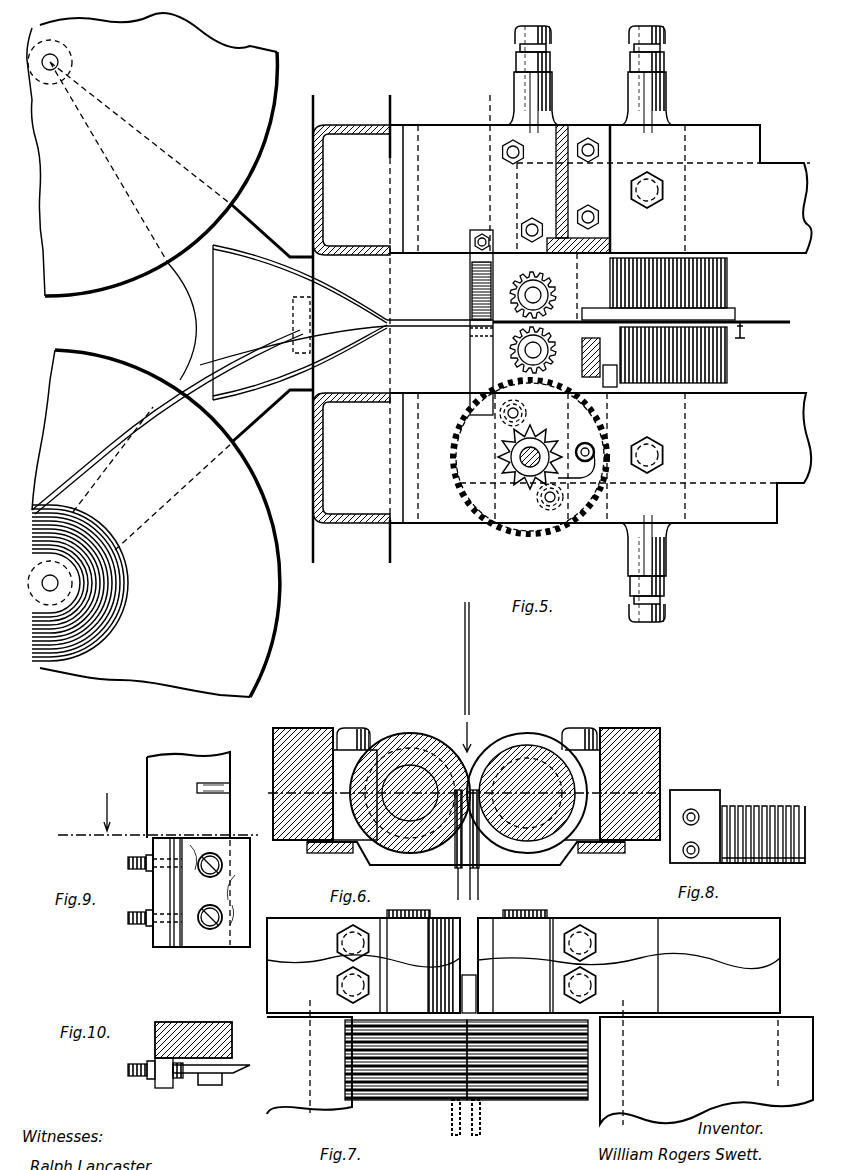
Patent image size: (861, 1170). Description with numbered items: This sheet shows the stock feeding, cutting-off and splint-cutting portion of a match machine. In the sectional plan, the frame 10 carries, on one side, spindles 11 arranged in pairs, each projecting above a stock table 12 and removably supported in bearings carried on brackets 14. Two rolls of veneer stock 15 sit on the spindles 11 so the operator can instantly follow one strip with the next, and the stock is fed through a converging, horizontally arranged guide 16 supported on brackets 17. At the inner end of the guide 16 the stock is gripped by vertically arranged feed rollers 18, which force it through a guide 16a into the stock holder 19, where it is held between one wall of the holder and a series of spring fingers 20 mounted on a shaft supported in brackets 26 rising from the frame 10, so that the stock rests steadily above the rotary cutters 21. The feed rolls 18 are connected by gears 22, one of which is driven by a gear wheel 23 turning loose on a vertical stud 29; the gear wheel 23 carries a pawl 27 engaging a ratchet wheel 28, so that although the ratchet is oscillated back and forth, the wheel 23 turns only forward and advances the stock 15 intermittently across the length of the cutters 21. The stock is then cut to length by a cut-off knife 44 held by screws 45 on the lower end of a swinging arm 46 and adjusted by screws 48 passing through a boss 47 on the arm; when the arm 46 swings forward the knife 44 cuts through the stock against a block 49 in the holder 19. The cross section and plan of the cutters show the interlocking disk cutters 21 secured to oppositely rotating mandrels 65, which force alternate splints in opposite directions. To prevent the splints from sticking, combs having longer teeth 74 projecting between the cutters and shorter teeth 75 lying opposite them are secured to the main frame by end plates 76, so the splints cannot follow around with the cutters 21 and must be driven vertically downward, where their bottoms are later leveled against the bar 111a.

In FIG. 5, the frame 10 is at (353, 514).
In FIG. 5, the spindles 11 is at (58, 60).
In FIG. 5, the stock table 12 is at (124, 378).
In FIG. 5, the brackets 14 is at (200, 330).
In FIG. 5, the veneer stock 15 is at (253, 373).
In FIG. 5, the guide 16 is at (247, 285).
In FIG. 5, the guide 16a is at (592, 378).
In FIG. 5, the brackets 17 is at (480, 277).
In FIG. 5, the feed rollers 18 is at (480, 305).
In FIG. 5, the stock holder 19 is at (723, 312).
In FIG. 5, the spring fingers 20 is at (747, 335).
In FIG. 5, the rotary cutters 21 is at (713, 293).
In FIG. 6, the rotary cutters 21 is at (410, 745).
In FIG. 7, the rotary cutters 21 is at (420, 1087).
In FIG. 5, the gears 22 is at (515, 275).
In FIG. 5, the gear wheel 23 is at (477, 480).
In FIG. 5, the brackets 26 is at (564, 128).
In FIG. 5, the pawl 27 is at (585, 462).
In FIG. 5, the ratchet wheel 28 is at (530, 480).
In FIG. 5, the vertical stud 29 is at (528, 466).
In FIG. 5, the cut-off knife 44 is at (640, 385).
In FIG. 9, the cut-off knife 44 is at (242, 880).
In FIG. 10, the cut-off knife 44 is at (230, 1080).
In FIG. 9, the screws 45 is at (210, 930).
In FIG. 10, the screws 45 is at (200, 1085).
In FIG. 9, the swinging arm 46 is at (156, 770).
In FIG. 10, the swinging arm 46 is at (196, 1036).
In FIG. 9, the boss 47 is at (163, 940).
In FIG. 10, the boss 47 is at (164, 1073).
In FIG. 9, the adjusting screws 48 is at (130, 925).
In FIG. 10, the adjusting screws 48 is at (141, 1060).
In FIG. 5, the block 49 is at (611, 262).
In FIG. 6, the mandrels 65 is at (538, 775).
In FIG. 7, the mandrels 65 is at (467, 914).
In FIG. 6, the long comb teeth 74 is at (480, 855).
In FIG. 8, the long comb teeth 74 is at (765, 815).
In FIG. 6, the short comb teeth 75 is at (457, 860).
In FIG. 8, the short comb teeth 75 is at (766, 865).
In FIG. 7, the end plates 76 is at (488, 980).
In FIG. 8, the end plates 76 is at (703, 795).
In FIG. 7, the leveling bar 111a is at (588, 1113).